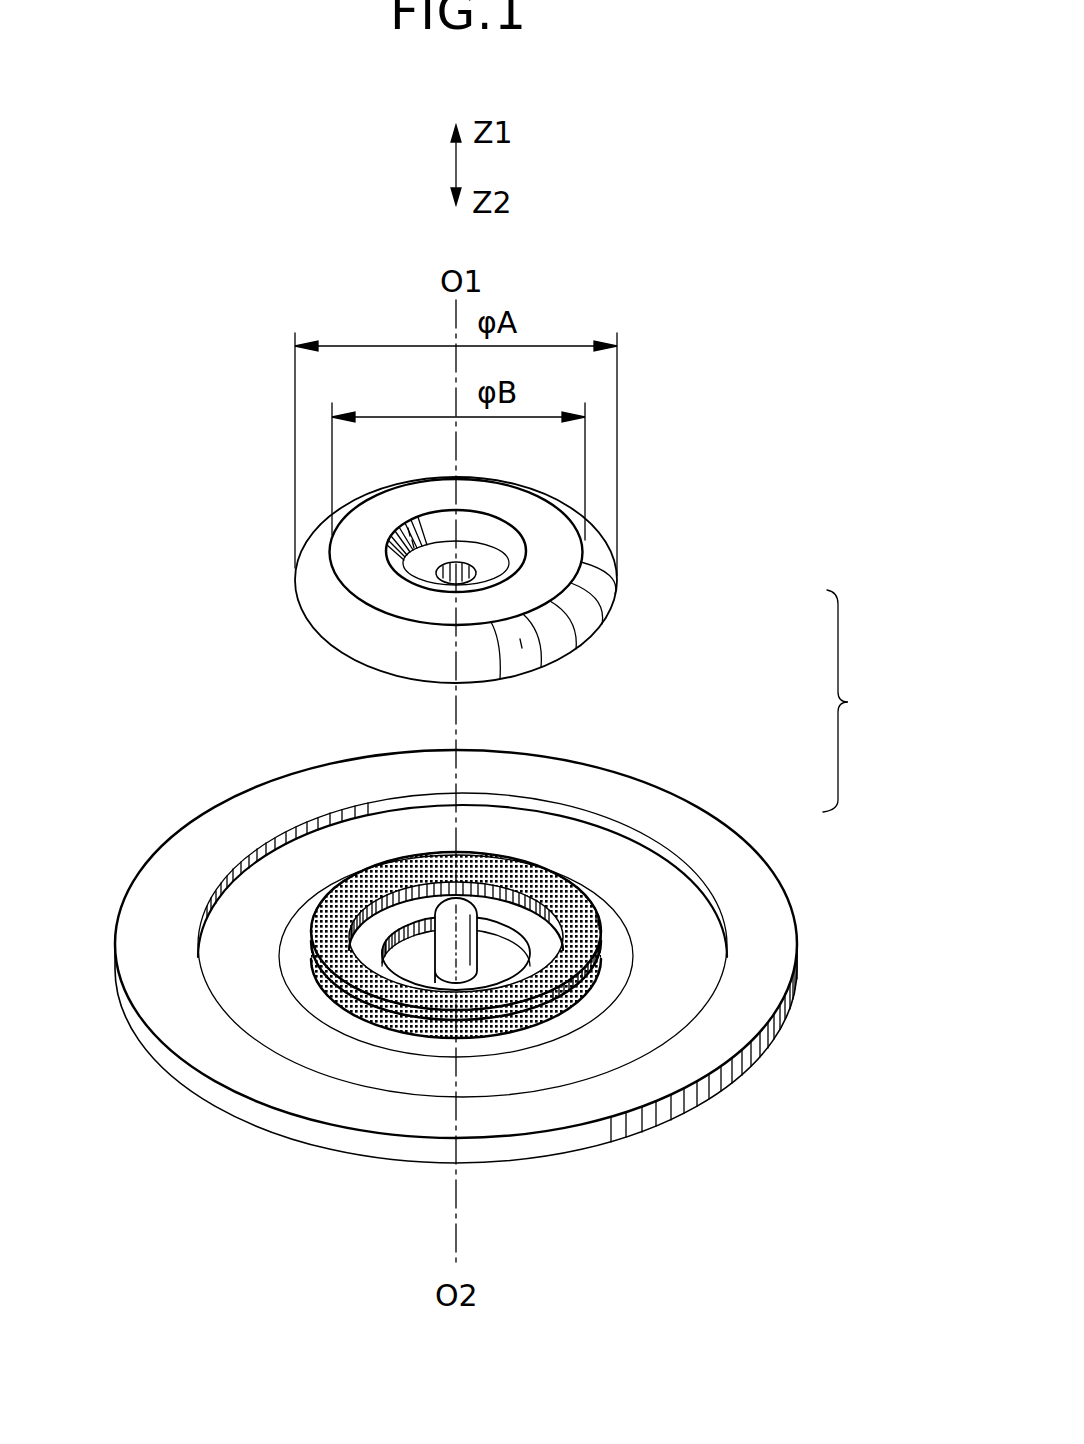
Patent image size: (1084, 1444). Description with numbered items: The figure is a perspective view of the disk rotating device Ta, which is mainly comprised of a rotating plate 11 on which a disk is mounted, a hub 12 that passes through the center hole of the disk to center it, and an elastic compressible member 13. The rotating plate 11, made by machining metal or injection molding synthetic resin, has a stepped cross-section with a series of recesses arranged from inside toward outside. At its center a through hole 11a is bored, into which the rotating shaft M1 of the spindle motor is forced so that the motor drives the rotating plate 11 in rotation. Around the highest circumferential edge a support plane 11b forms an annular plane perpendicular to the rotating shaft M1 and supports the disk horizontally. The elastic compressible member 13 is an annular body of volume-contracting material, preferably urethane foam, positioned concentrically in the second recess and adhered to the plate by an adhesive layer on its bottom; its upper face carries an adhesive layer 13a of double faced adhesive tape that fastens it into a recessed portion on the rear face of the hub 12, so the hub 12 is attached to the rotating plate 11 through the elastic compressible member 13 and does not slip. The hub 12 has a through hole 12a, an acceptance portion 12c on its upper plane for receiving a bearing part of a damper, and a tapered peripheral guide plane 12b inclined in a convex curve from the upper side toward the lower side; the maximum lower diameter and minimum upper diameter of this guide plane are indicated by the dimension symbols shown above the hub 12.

The rotating plate 11 is at (503, 957).
The through hole 11a is at (442, 957).
The support plane 11b is at (675, 1072).
The hub 12 is at (518, 556).
The through hole 12a is at (466, 566).
The guide plane 12b is at (617, 590).
The acceptance portion 12c is at (503, 538).
The elastic compressible member 13 is at (493, 964).
The adhesive layer 13a is at (540, 1003).
The rotating shaft M1 is at (445, 903).
The disk rotating device Ta is at (858, 701).